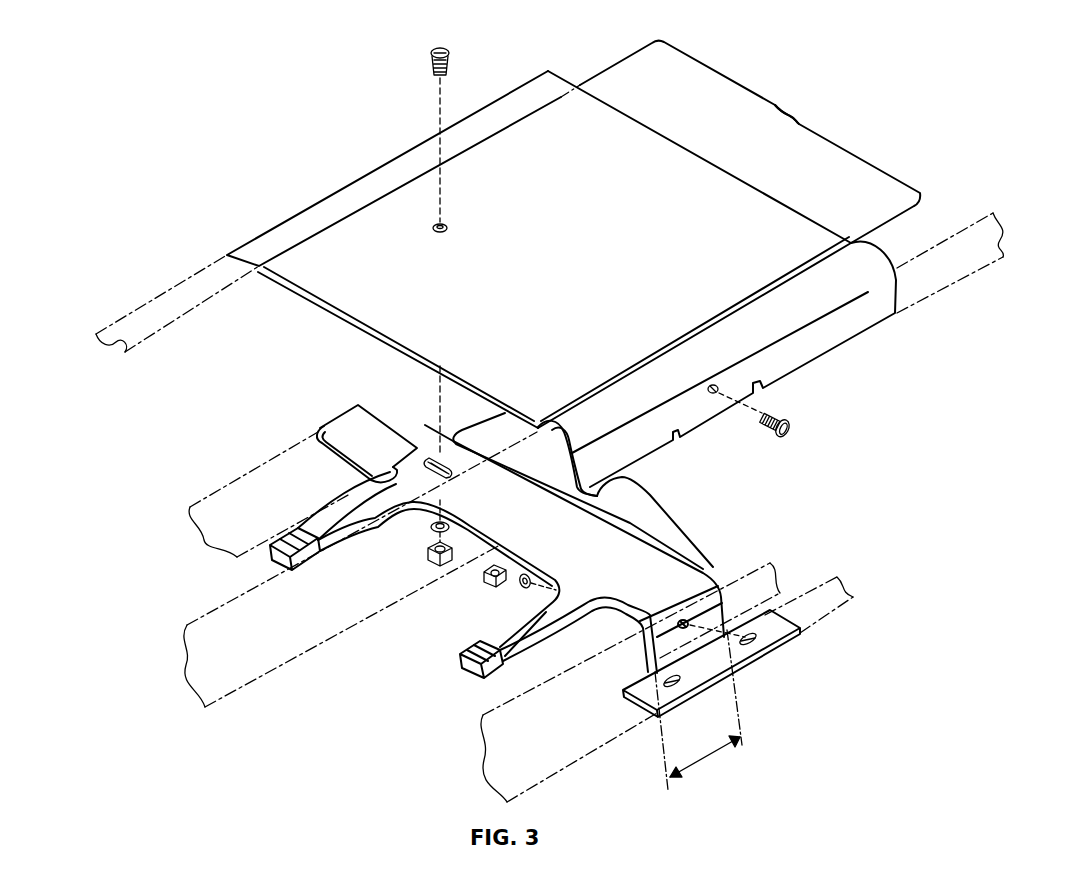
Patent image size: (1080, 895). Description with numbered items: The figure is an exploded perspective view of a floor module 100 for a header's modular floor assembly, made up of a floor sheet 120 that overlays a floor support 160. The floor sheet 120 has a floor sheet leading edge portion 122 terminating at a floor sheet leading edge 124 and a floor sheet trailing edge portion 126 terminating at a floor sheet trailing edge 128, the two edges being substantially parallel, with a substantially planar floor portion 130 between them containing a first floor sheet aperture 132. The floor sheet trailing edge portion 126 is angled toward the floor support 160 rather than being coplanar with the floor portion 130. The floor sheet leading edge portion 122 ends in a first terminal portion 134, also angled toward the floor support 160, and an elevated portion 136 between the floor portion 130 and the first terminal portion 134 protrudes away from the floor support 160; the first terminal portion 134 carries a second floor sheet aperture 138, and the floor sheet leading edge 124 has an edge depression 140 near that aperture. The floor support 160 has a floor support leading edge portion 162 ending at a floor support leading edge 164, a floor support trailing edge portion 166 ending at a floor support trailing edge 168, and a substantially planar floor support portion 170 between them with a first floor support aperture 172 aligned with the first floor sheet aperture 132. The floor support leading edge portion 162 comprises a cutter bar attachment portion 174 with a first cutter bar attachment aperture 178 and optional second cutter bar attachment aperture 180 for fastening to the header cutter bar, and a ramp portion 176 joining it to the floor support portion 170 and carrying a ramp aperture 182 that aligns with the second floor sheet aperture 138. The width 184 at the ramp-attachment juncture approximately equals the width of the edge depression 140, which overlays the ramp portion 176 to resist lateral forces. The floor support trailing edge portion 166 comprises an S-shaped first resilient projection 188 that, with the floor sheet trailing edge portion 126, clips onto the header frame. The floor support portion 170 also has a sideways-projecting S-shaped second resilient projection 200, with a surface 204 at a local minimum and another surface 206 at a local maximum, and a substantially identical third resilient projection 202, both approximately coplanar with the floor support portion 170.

The floor module 100 is at (260, 57).
The floor sheet 120 is at (573, 264).
The floor sheet leading edge portion 122 is at (188, 668).
The floor sheet leading edge 124 is at (860, 343).
The floor sheet trailing edge portion 126 is at (98, 345).
The floor sheet trailing edge 128 is at (338, 186).
The floor portion 130 is at (788, 116).
The first floor sheet aperture 132 is at (442, 224).
The first terminal portion 134 is at (1003, 232).
The elevated portion 136 is at (603, 405).
The second floor sheet aperture 138 is at (712, 396).
The edge depression 140 is at (722, 400).
The floor support 160 is at (347, 392).
The floor support leading edge portion 162 is at (485, 762).
The floor support leading edge 164 is at (741, 677).
The floor support trailing edge portion 166 is at (204, 540).
The floor support trailing edge 168 is at (318, 440).
The floor support portion 170 is at (565, 510).
The first floor support aperture 172 is at (428, 456).
The cutter bar attachment portion 174 is at (848, 592).
The ramp portion 176 is at (780, 570).
The first cutter bar attachment aperture 178 is at (680, 690).
The second cutter bar attachment aperture 180 is at (760, 648).
The ramp aperture 182 is at (640, 655).
The width 184 is at (705, 757).
The first resilient projection 188 is at (340, 471).
The second resilient projection 200 is at (430, 566).
The third resilient projection 202 is at (272, 556).
The surface 204 is at (520, 660).
The surface 206 is at (484, 652).